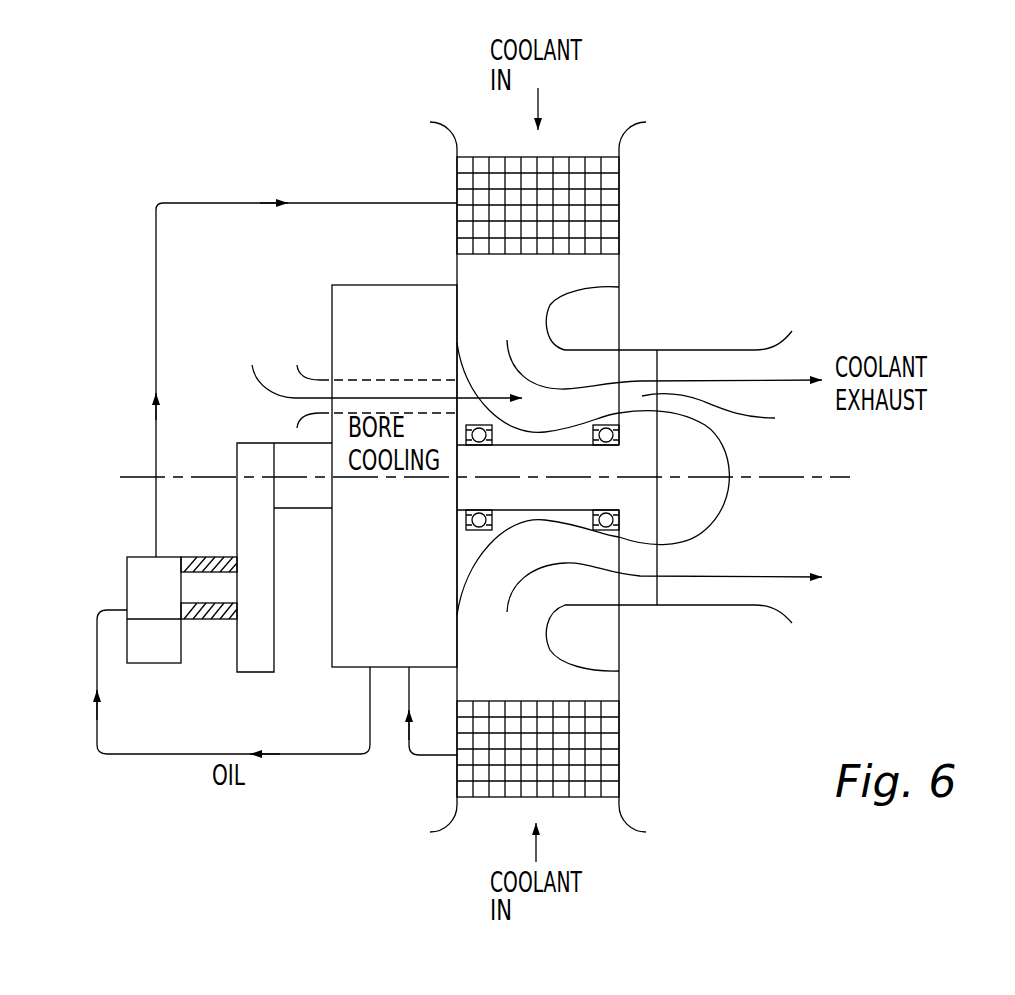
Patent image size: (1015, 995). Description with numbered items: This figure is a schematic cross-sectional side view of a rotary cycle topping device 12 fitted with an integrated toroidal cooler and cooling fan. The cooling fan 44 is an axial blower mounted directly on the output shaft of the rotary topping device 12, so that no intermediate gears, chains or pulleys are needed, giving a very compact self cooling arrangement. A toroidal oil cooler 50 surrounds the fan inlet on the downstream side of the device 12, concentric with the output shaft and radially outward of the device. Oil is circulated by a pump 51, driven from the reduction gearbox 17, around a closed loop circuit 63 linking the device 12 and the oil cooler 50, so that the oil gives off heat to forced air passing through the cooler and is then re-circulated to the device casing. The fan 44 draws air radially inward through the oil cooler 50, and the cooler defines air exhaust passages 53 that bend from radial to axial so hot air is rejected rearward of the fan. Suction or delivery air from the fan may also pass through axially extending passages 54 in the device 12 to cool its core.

The rotary cycle topping device 12 is at (367, 308).
The reduction gearbox 17 is at (237, 458).
The cooling fan 44 is at (723, 414).
The oil cooler 50 is at (605, 212).
The pump 51 is at (150, 588).
The air exhaust passages 53 is at (578, 368).
The axially extending passages 54 is at (385, 380).
The closed loop circuit 63 is at (155, 283).